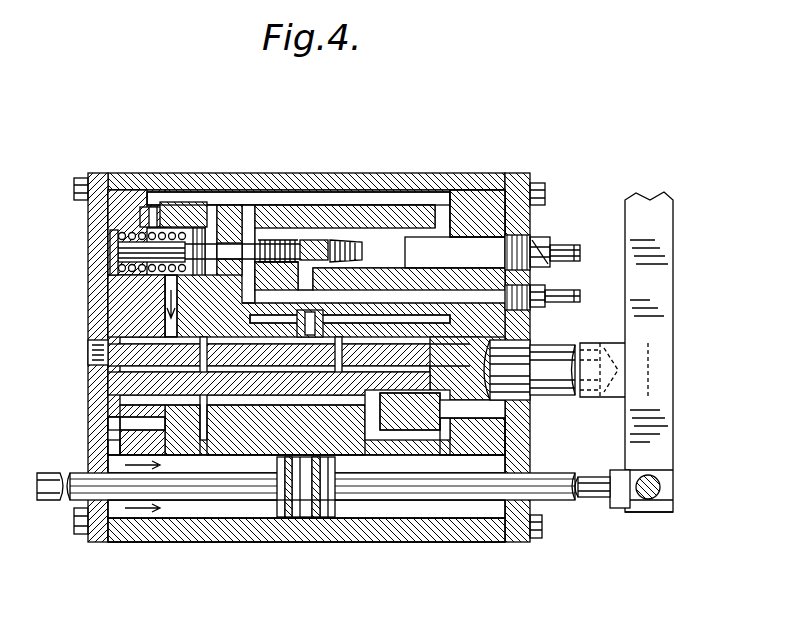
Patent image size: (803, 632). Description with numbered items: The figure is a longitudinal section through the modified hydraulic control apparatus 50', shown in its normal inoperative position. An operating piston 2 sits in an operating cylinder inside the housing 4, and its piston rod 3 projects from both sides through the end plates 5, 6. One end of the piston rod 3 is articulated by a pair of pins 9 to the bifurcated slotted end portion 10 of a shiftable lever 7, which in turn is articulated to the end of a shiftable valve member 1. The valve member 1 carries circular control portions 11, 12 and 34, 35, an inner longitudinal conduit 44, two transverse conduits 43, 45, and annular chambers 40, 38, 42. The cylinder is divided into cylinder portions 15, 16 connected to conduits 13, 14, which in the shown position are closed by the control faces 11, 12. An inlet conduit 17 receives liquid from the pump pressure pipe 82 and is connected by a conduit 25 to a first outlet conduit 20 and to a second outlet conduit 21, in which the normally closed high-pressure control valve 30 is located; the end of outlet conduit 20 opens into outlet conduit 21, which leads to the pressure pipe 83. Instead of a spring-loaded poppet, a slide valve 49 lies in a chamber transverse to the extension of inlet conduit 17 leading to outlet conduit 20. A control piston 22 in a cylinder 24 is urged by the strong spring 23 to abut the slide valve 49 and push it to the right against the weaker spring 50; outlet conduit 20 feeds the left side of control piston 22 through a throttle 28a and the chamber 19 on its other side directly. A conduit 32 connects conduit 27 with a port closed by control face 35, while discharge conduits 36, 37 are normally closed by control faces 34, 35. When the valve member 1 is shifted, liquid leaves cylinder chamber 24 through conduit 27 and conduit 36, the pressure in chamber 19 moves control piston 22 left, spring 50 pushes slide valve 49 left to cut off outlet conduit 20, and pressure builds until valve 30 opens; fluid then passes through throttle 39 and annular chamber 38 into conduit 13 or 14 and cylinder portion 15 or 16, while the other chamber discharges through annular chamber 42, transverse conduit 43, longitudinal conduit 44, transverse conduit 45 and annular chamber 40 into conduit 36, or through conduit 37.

The shiftable valve member 1 is at (563, 393).
The operating piston 2 is at (272, 493).
The piston rod 3 is at (597, 494).
The housing 4 is at (466, 190).
The end plate 5 is at (80, 186).
The end plate 6 is at (541, 198).
The shiftable lever 7 is at (665, 229).
The pins 9 is at (660, 480).
The bifurcated slotted end portion 10 is at (654, 501).
The control portion 11 is at (198, 430).
The control portion 12 is at (418, 435).
The conduit 13 is at (110, 438).
The conduit 14 is at (468, 438).
The cylinder portion 15 is at (123, 508).
The cylinder portion 16 is at (487, 512).
The inlet conduit 17 is at (528, 317).
The chamber 19 is at (212, 235).
The first outlet conduit 20 is at (397, 198).
The second outlet conduit 21 is at (466, 246).
The control piston 22 is at (166, 212).
The spring 23 is at (113, 209).
The cylinder 24 is at (117, 248).
The conduit 25 is at (306, 264).
The conduit 27 is at (178, 292).
The throttle 28a is at (133, 213).
The second high-pressure control valve 30 is at (357, 256).
The conduit 32 is at (424, 322).
The control portion 34 is at (149, 338).
The control portion 35 is at (433, 358).
The conduit 36 is at (110, 427).
The conduit 37 is at (498, 415).
The annular chamber 38 is at (300, 395).
The throttle 39 is at (316, 307).
The annular chamber 40 is at (190, 377).
The annular chamber 42 is at (410, 411).
The transverse conduit 43 is at (410, 411).
The inner longitudinal conduit 44 is at (100, 386).
The transverse conduit 45 is at (187, 342).
The slide valve 49 is at (232, 243).
The spring 50 is at (286, 204).
The hydraulic control apparatus 50' is at (306, 574).
The pressure conduit 82 is at (572, 293).
The pressure conduit 83 is at (565, 248).